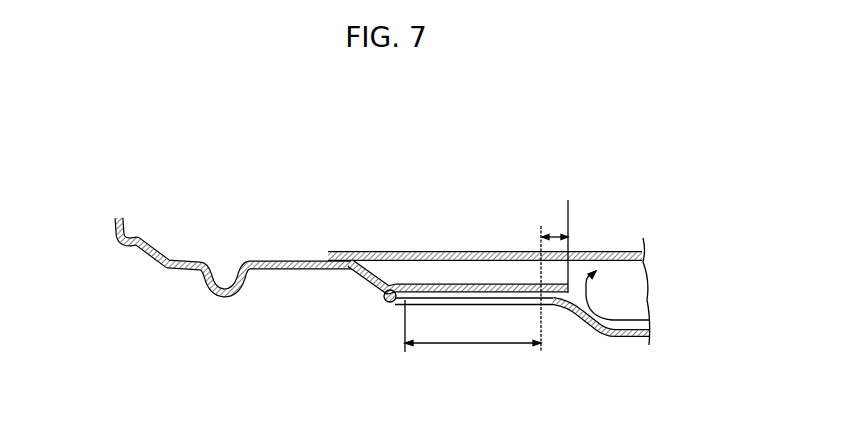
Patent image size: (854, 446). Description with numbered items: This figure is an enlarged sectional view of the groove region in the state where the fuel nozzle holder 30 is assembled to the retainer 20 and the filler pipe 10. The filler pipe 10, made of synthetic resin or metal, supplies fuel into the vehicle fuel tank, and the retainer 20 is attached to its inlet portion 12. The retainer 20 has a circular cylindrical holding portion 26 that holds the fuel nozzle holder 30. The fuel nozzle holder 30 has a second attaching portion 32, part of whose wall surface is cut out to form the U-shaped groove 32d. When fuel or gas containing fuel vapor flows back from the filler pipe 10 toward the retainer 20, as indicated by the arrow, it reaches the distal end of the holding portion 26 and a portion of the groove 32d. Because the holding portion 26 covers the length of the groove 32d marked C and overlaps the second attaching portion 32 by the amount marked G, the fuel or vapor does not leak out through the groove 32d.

The retainer 20 is at (257, 259).
The filler pipe 10 is at (368, 252).
The holding portion 26 is at (447, 284).
The fuel nozzle holder 30 is at (392, 304).
The second attaching portion 32 is at (553, 306).
The groove 32d is at (505, 303).
The inlet portion 12 is at (590, 250).